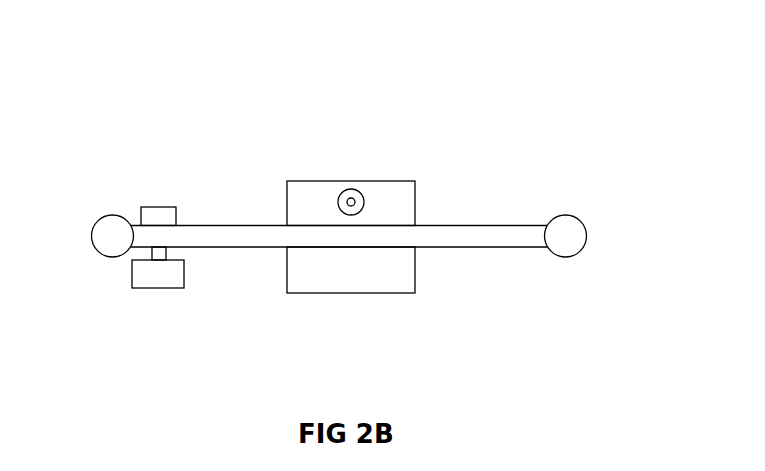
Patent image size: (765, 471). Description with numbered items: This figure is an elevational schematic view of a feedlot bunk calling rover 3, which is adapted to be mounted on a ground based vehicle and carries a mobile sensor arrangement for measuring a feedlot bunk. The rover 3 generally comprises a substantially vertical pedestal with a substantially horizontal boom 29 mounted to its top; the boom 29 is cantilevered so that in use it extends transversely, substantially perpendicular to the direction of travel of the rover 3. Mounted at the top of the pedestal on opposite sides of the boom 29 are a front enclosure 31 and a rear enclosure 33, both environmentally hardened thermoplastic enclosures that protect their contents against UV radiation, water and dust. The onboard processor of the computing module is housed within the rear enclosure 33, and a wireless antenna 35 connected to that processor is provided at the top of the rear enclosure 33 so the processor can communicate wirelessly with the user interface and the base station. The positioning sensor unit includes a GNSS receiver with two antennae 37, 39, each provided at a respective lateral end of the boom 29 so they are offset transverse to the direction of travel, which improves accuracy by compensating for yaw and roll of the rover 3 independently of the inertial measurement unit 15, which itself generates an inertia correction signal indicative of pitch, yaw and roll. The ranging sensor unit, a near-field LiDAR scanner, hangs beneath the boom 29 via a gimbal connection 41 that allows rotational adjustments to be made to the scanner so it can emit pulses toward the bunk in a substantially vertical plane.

The rover 3 is at (463, 70).
The inertial measurement unit 15 is at (167, 207).
The boom 29 is at (480, 225).
The front enclosure 31 is at (385, 297).
The rear enclosure 33 is at (397, 180).
The wireless antenna 35 is at (340, 195).
The antenna 37 is at (114, 229).
The antenna 39 is at (578, 227).
The gimbal connection 41 is at (168, 250).